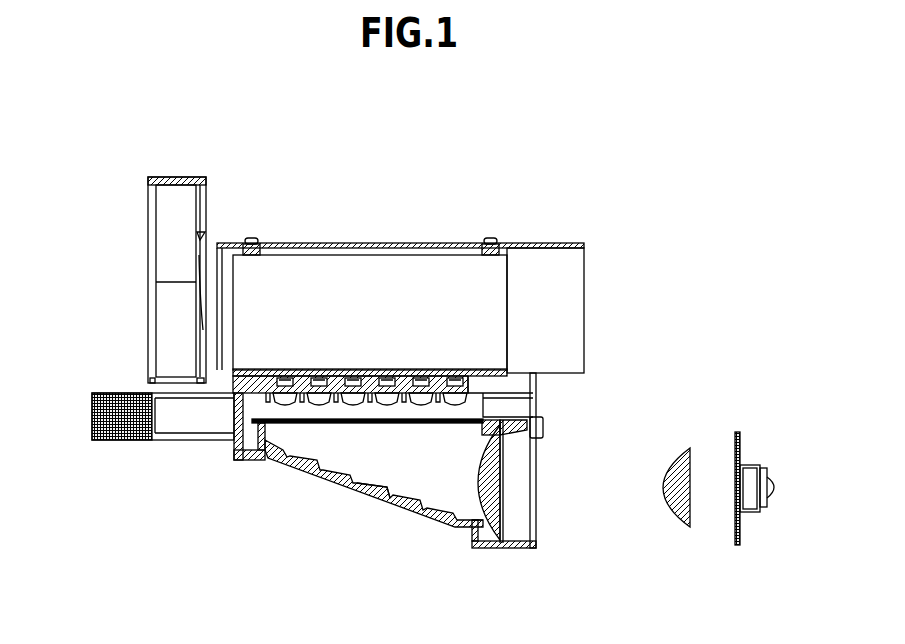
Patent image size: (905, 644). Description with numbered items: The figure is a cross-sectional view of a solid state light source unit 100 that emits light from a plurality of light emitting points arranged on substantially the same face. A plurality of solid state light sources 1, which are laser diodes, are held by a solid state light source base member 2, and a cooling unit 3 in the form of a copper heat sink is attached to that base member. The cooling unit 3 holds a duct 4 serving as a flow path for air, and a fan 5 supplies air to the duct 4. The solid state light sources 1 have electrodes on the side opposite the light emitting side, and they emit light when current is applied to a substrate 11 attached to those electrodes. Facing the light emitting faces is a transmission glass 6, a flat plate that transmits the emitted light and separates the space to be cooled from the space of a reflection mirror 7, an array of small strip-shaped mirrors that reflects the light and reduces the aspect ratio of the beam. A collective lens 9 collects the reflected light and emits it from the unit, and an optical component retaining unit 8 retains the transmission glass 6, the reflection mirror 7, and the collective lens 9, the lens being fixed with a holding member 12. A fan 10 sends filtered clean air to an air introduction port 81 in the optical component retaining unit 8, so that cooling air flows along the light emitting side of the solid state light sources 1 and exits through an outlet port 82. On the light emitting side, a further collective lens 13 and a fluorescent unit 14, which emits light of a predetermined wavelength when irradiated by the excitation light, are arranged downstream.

The solid state light source unit 100 is at (107, 121).
The solid state light sources 1 is at (318, 422).
The solid state light source base member 2 is at (237, 388).
The cooling unit 3 is at (382, 270).
The duct 4 is at (552, 262).
The fan 5 is at (163, 233).
The transmission glass 6 is at (440, 423).
The reflection mirror 7 is at (383, 498).
The optical component retaining unit 8 is at (340, 482).
The collective lens 9 is at (487, 548).
The fan 10 is at (92, 428).
The substrate 11 is at (272, 369).
The holding member 12 is at (507, 548).
The collective lens 13 is at (668, 455).
The fluorescent unit 14 is at (788, 413).
The air introduction port 81 is at (252, 410).
The outlet port 82 is at (528, 407).